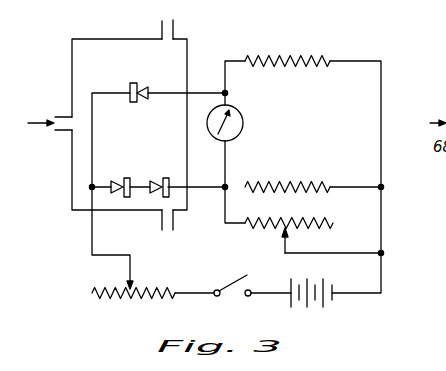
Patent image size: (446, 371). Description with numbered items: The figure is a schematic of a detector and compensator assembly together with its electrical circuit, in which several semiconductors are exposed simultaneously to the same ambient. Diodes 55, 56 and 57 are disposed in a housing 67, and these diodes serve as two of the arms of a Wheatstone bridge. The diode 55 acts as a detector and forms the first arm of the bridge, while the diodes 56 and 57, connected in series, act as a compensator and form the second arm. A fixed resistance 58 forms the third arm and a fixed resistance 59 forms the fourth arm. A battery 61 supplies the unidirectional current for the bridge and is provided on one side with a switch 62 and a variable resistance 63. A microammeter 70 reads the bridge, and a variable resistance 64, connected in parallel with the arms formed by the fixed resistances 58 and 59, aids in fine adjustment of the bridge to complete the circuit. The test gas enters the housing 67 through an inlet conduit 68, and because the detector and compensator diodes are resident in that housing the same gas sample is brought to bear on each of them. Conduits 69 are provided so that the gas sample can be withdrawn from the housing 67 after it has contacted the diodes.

The diode 55 is at (140, 82).
The diode 56 is at (127, 177).
The diode 57 is at (166, 177).
The fixed resistance 58 is at (282, 60).
The fixed resistance 59 is at (283, 186).
The battery 61 is at (309, 304).
The switch 62 is at (237, 282).
The variable resistance 63 is at (118, 298).
The variable resistance 64 is at (294, 222).
The housing 67 is at (111, 38).
The inlet conduit 68 is at (63, 112).
The conduits 69 is at (175, 27).
The microammeter 70 is at (243, 119).